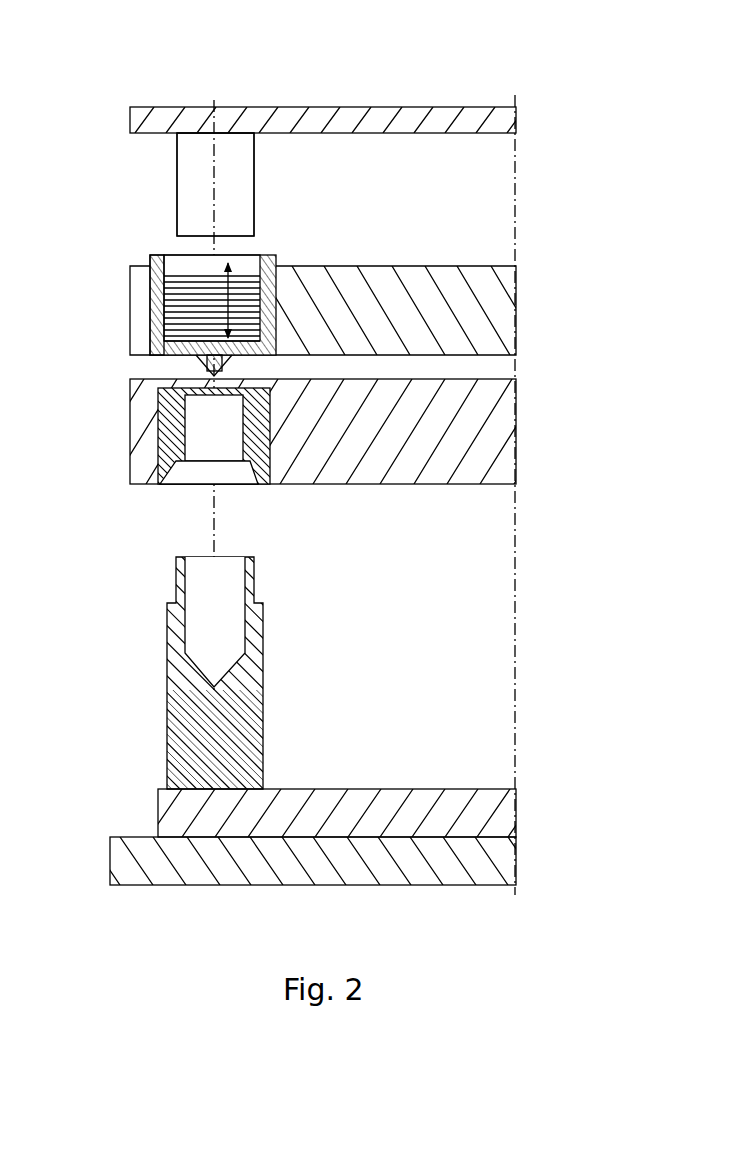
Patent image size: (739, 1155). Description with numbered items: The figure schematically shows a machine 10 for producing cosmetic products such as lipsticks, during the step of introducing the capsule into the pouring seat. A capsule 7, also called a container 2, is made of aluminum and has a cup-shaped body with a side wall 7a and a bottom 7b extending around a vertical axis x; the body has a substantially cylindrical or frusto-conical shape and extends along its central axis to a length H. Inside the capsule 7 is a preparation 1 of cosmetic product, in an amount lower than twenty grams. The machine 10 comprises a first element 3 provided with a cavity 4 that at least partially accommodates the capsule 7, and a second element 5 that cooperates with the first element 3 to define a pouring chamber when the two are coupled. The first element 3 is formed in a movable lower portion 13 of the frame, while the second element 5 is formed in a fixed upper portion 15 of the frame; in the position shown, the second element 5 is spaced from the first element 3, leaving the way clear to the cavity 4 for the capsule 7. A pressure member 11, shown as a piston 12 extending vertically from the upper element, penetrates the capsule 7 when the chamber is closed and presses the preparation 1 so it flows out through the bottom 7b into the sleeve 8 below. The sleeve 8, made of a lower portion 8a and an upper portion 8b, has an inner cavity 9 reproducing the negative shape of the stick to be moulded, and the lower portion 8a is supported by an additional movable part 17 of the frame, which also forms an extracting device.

The preparation 1 is at (164, 318).
The container 2 is at (152, 249).
The first element 3 is at (500, 323).
The cavity 4 is at (185, 318).
The second element 5 is at (405, 117).
The capsule 7 is at (277, 263).
The side wall 7a is at (160, 286).
The bottom 7b is at (185, 361).
The sleeve 8 is at (265, 654).
The lower portion 8a is at (265, 752).
The upper portion 8b is at (270, 447).
The inner cavity 9 is at (243, 590).
The machine 10 is at (548, 77).
The pressure member 11 is at (259, 190).
The piston 12 is at (181, 158).
The movable lower portion 13 is at (500, 292).
The fixed upper portion 15 is at (471, 117).
The movable part 17 is at (433, 800).
The length H is at (238, 283).
The vertical axis x is at (215, 151).